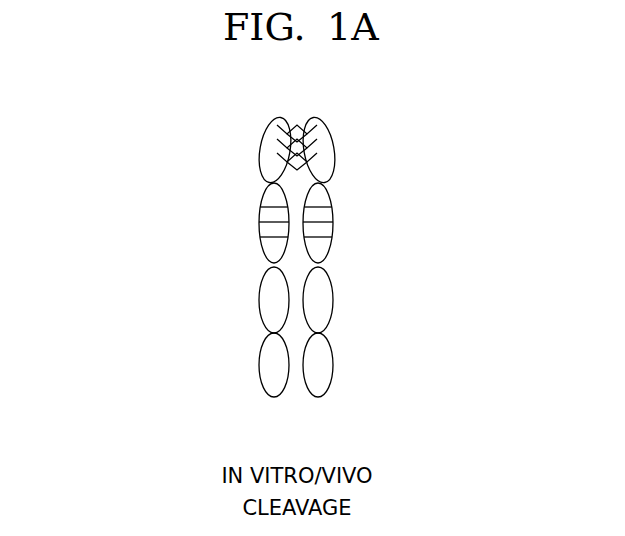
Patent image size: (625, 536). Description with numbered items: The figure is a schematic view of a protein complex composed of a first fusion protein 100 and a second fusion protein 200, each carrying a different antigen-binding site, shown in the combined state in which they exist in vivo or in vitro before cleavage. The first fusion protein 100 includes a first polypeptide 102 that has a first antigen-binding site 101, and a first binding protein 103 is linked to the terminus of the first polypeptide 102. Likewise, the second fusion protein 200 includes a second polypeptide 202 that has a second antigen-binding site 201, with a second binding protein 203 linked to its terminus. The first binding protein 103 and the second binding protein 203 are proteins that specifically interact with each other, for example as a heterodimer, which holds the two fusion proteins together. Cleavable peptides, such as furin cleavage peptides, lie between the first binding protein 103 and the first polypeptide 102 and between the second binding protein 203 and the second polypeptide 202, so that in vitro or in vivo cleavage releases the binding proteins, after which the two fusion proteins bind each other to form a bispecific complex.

The first fusion protein 100 is at (110, 120).
The first antigen-binding site 101 is at (243, 188).
The first polypeptide 102 is at (178, 190).
The first binding protein 103 is at (243, 118).
The second fusion protein 200 is at (481, 120).
The second antigen-binding site 201 is at (350, 188).
The second polypeptide 202 is at (416, 190).
The second binding protein 203 is at (350, 118).